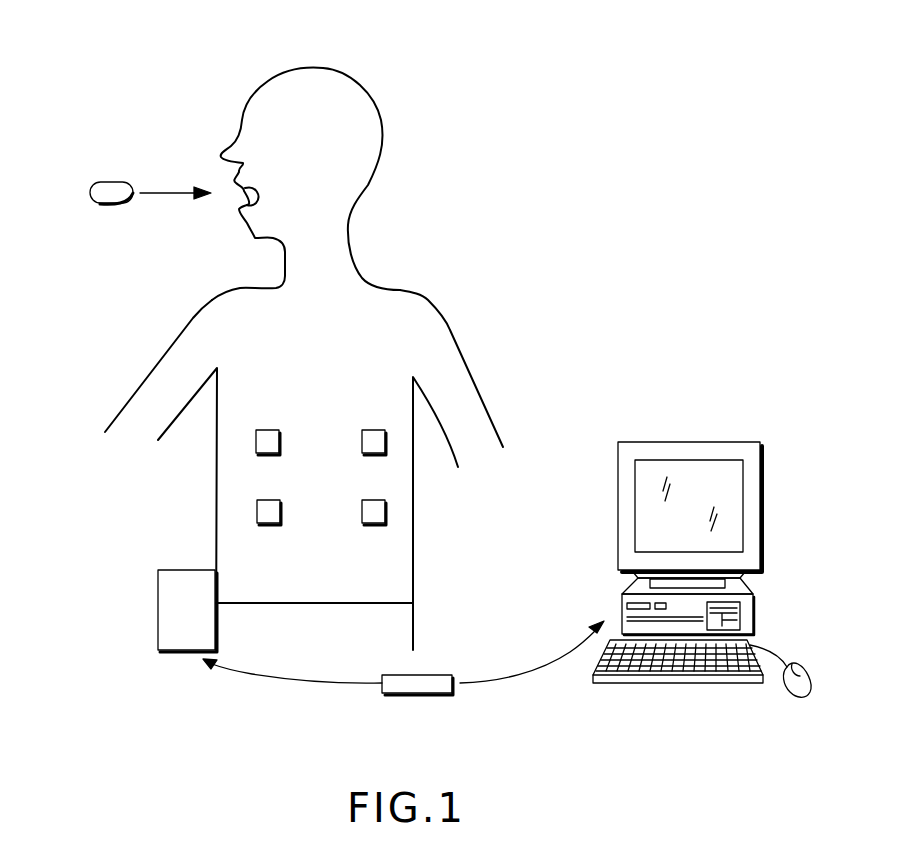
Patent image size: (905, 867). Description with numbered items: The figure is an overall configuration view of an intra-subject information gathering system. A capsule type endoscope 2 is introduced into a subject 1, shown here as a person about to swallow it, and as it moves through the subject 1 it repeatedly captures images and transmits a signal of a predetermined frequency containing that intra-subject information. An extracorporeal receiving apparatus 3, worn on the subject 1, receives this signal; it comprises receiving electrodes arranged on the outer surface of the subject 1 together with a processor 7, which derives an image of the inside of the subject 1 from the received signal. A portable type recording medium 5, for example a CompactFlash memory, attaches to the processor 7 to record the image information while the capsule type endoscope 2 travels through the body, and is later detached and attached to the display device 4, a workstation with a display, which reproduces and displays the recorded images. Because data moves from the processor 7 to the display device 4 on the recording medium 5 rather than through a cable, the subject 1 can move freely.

The subject 1 is at (323, 68).
The capsule type endoscope 2 is at (108, 205).
The extracorporeal receiving apparatus 3 is at (53, 463).
The display device 4 is at (648, 441).
The portable type recording medium 5 is at (442, 675).
The processor 7 is at (170, 611).